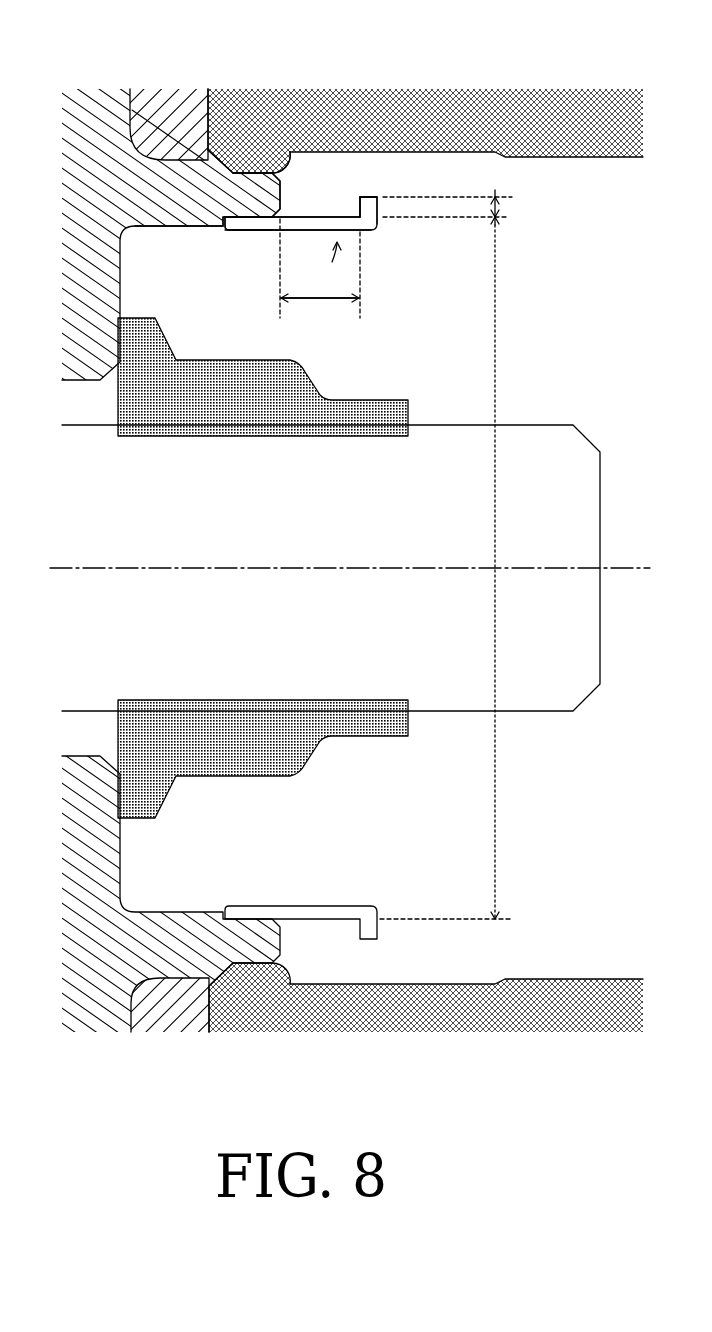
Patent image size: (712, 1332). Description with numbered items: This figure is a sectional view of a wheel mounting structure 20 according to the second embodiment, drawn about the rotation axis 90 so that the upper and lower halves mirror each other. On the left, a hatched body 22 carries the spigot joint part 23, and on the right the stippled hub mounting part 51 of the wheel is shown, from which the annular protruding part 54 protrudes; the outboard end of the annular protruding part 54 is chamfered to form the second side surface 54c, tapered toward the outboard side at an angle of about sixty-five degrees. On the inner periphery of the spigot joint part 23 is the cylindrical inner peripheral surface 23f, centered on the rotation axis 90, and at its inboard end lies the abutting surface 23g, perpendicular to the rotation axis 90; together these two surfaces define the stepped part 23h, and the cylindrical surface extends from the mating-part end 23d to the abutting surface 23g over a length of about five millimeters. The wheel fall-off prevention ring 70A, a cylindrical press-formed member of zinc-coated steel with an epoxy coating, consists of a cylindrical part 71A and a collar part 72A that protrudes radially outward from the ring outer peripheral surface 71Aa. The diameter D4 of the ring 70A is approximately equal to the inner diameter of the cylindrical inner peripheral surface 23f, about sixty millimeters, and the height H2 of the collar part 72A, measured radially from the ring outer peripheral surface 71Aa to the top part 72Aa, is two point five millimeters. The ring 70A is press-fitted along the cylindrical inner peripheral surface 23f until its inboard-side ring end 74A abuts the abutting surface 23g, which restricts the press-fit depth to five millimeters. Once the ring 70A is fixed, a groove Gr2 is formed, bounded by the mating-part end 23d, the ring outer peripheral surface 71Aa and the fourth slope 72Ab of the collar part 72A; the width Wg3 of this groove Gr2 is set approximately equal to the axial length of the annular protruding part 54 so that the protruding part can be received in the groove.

The sealing device 20 is at (57, 63).
The housing 22 is at (84, 98).
The spigot joint part 23 is at (160, 198).
The mating-part end 23d is at (283, 197).
The cylindrical inner peripheral surface 23f is at (252, 231).
The abutting surface 23g is at (234, 233).
The stepped part 23h is at (218, 229).
The hub mounting part 51 is at (376, 105).
The annular protruding part 54 is at (250, 160).
The second side surface 54c is at (287, 157).
The wheel fall-off prevention ring 70A is at (412, 231).
The cylindrical part 71A is at (308, 226).
The ring outer peripheral surface 71Aa is at (340, 216).
The collar part 72A is at (377, 212).
The top part 72Aa is at (370, 196).
The fourth slope 72Ab is at (360, 203).
The ring end 74A is at (222, 230).
The rotation axis 90 is at (90, 570).
The height of collar part H2 is at (447, 197).
The diameter of ring D4 is at (446, 568).
The groove Gr2 is at (320, 268).
The width of groove Wg3 is at (320, 312).